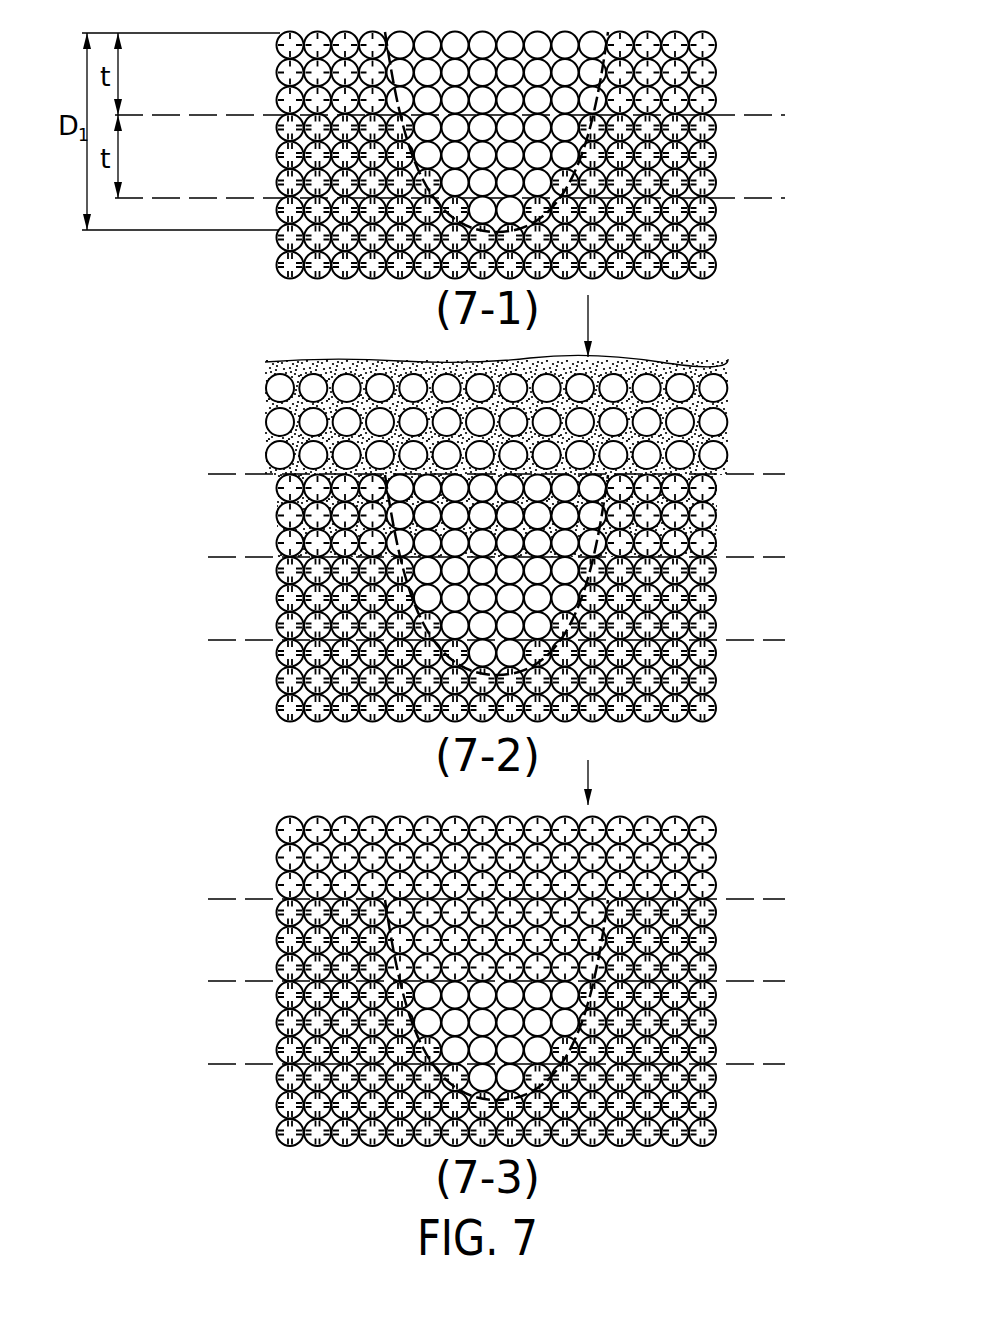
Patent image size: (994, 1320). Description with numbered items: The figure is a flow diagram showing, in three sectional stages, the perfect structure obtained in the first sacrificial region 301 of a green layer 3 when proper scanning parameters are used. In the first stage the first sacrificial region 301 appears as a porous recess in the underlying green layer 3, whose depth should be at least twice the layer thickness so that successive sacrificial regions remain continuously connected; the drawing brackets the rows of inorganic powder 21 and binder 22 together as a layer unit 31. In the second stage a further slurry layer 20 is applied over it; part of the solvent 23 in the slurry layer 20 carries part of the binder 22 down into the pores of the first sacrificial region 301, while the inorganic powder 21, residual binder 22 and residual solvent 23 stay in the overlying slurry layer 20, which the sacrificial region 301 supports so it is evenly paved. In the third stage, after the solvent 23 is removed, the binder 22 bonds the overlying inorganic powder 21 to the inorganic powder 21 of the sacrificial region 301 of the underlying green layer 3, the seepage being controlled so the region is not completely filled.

The green layer 3 is at (467, 589).
The first sacrificial region 301 is at (591, 566).
The inorganic powder 21 is at (285, 76).
The binder 22 is at (281, 100).
The fiber layer unit 31 is at (454, 507).
The slurry layer 20 is at (555, 438).
The solvent 23 is at (796, 448).